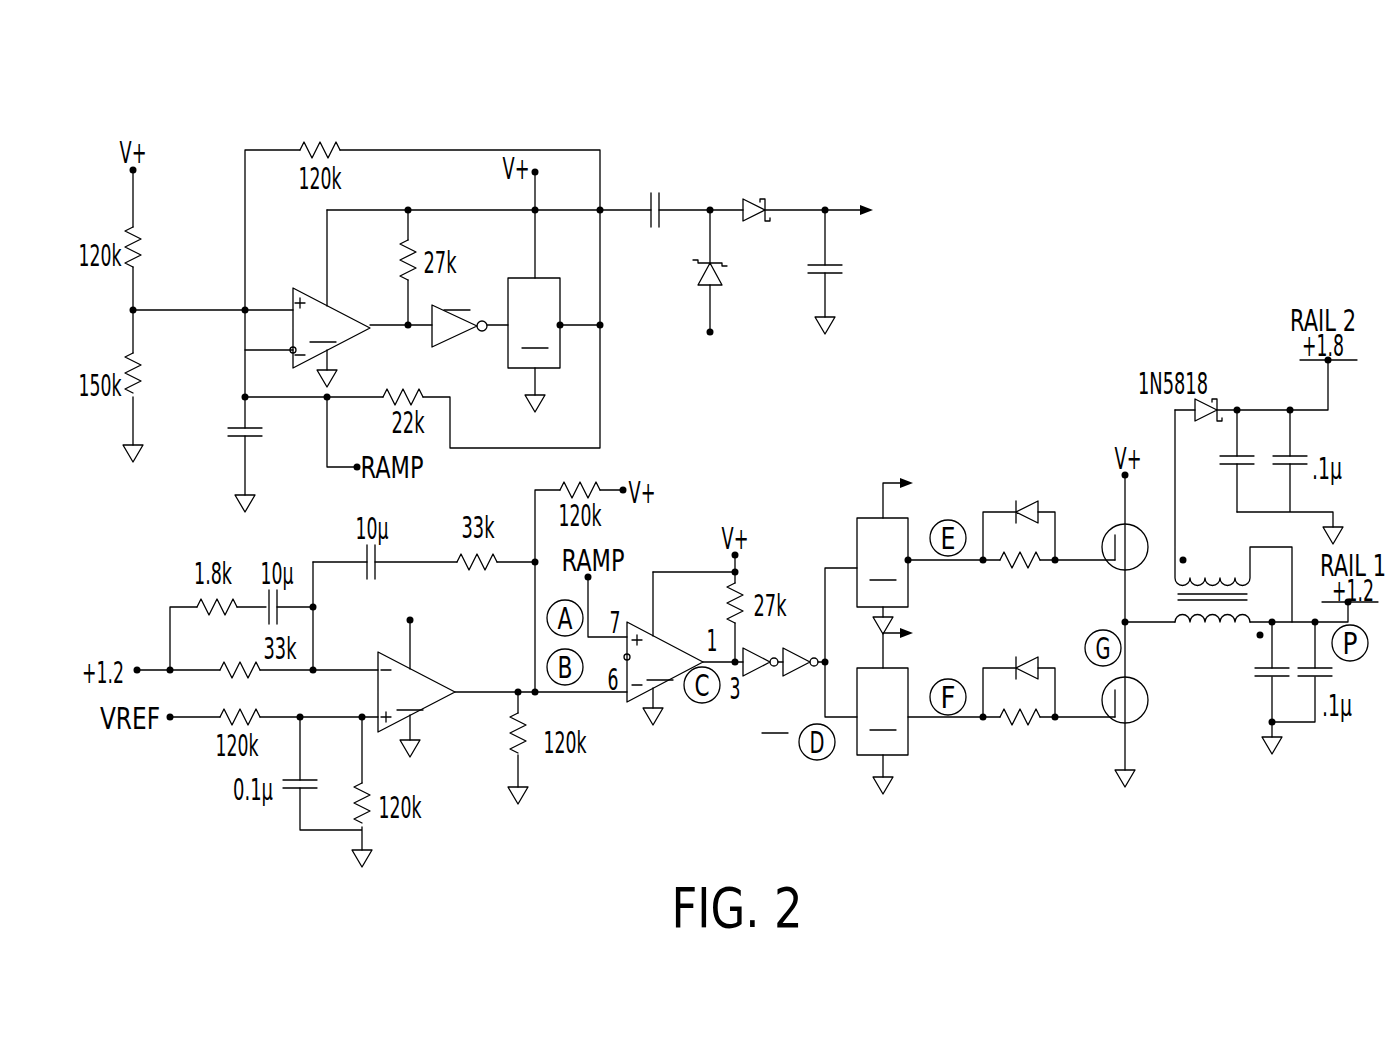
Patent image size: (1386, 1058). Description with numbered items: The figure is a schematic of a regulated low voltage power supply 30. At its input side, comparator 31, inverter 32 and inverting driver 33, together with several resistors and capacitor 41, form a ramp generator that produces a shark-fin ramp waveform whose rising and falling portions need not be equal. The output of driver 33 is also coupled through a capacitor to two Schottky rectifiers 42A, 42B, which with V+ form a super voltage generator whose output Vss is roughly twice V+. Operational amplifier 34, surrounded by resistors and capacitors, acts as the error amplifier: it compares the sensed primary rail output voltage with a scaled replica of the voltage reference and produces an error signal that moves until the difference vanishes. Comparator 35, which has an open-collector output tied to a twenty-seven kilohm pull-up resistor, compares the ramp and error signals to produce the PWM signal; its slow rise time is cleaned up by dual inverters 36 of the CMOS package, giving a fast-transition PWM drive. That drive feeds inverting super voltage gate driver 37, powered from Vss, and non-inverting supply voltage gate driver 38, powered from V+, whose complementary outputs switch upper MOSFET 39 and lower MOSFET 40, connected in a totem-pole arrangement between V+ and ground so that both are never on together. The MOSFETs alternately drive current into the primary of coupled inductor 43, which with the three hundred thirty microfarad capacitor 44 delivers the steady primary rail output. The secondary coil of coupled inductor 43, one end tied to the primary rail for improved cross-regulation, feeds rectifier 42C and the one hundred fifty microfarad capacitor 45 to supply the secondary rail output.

The power supply 30 is at (781, 195).
The comparator 31 is at (313, 297).
The inverter 32 is at (452, 340).
The inverting driver 33 is at (560, 368).
The operational amplifier 34 is at (445, 700).
The comparator 35 is at (632, 702).
The dual inverters 36 is at (793, 650).
The super voltage gate driver 37 is at (870, 517).
The supply voltage gate driver 38 is at (873, 757).
The MOSFET 39 is at (1113, 528).
The MOSFET 40 is at (1113, 722).
The capacitor 41 is at (233, 433).
The rectifier 42A is at (718, 283).
The rectifier 42B is at (750, 200).
The rectifier 42C is at (1210, 430).
The coupled inductor 43 is at (1190, 623).
The capacitor 44 is at (1260, 687).
The capacitor 45 is at (1243, 457).